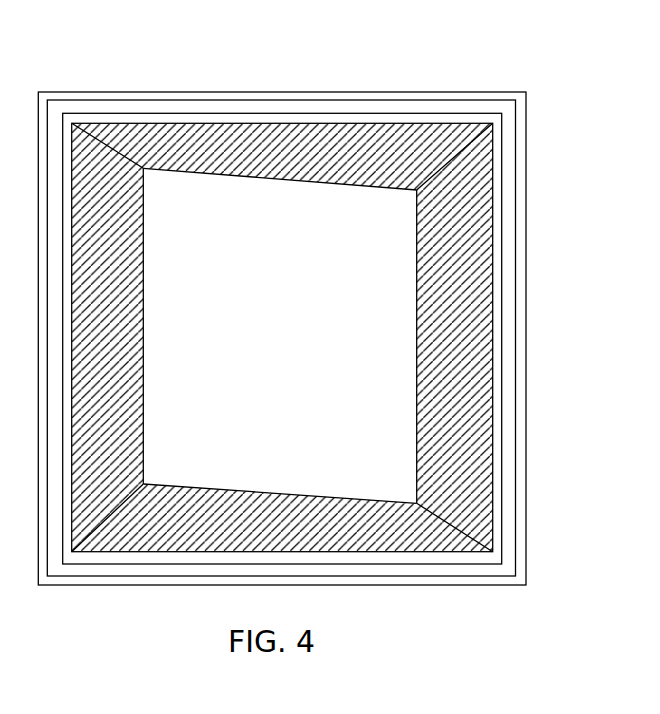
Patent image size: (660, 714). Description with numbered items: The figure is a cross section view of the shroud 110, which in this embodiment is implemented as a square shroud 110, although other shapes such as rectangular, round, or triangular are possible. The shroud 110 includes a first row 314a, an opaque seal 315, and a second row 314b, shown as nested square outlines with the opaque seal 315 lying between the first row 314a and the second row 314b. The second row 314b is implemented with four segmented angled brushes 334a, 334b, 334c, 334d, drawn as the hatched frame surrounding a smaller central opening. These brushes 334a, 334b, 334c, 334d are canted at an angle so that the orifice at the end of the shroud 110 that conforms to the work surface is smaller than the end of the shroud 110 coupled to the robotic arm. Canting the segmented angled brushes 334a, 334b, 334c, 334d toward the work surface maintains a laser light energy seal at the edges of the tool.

The shroud 110 is at (389, 76).
The first row 314a is at (522, 142).
The second row 314b is at (497, 473).
The opaque seal 315 is at (508, 238).
The segmented angled brush 334a is at (287, 165).
The segmented angled brush 334b is at (435, 320).
The segmented angled brush 334c is at (275, 512).
The segmented angled brush 334d is at (128, 358).